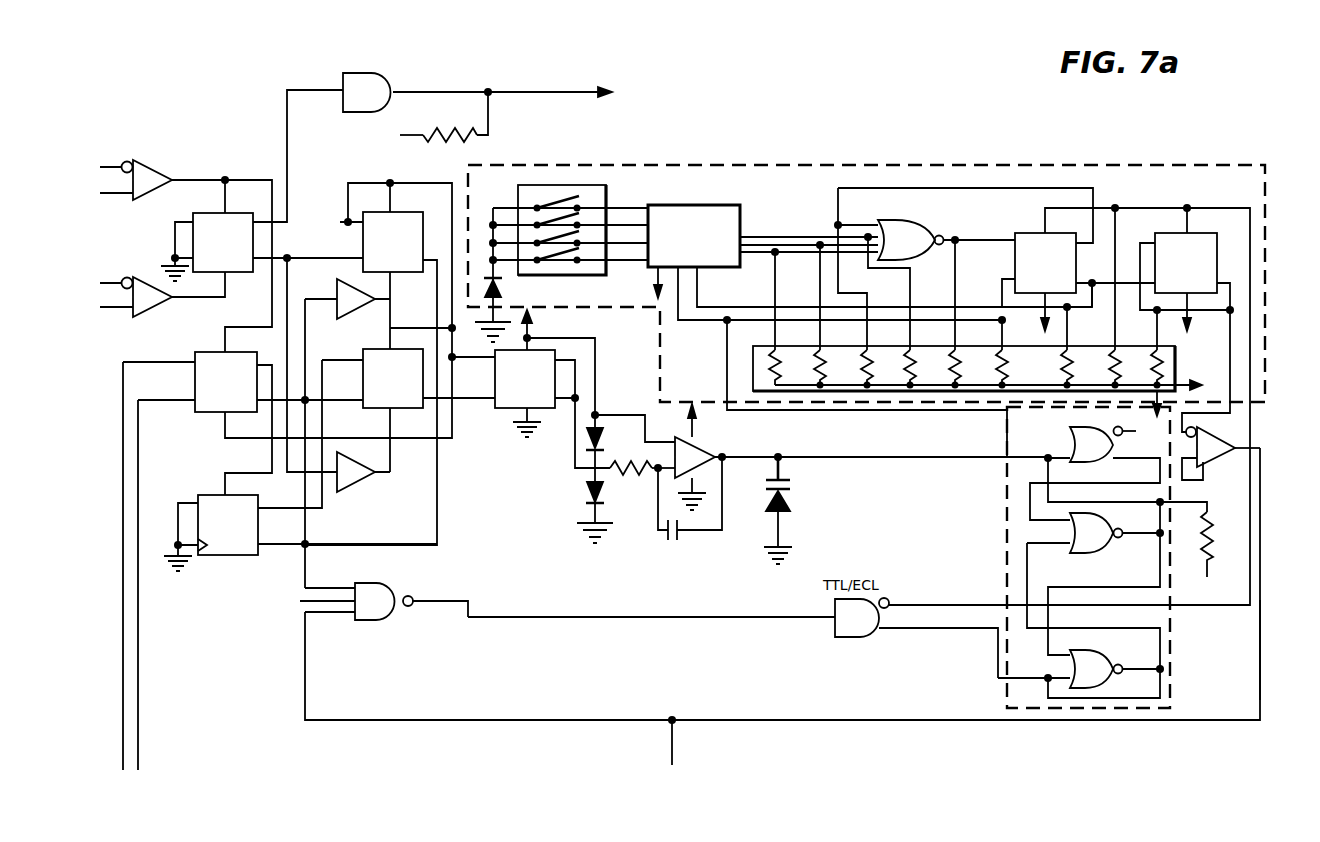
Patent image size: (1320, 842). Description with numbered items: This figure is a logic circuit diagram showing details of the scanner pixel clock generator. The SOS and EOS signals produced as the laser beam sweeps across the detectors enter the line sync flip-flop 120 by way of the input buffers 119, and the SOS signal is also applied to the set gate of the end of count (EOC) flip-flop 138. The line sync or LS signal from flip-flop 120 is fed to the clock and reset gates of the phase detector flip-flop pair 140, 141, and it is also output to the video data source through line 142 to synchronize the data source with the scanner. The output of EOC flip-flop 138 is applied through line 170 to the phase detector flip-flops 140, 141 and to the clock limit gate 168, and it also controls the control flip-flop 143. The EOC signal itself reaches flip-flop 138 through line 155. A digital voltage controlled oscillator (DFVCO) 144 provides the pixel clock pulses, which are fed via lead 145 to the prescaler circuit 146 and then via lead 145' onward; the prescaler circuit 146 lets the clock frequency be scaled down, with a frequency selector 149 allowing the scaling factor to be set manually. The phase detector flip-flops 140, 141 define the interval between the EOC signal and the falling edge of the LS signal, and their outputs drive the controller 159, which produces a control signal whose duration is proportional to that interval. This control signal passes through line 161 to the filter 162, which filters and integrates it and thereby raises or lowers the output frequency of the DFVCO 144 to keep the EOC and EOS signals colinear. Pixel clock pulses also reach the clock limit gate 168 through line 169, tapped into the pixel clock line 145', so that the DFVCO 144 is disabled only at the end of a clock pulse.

The start-of-scan input inverter 119 is at (213, 181).
The line sync flip-flop 120 is at (209, 213).
The end of count (EOC) flip-flop 138 is at (213, 352).
The phase detector flip-flop 140 is at (399, 213).
The phase detector flip-flop 141 is at (377, 345).
The line 142 is at (479, 77).
The control flip-flop 143 is at (210, 495).
The digital voltage controlled oscillator (DFVCO) 144 is at (988, 538).
The lead 145 is at (867, 389).
The lead 145' is at (964, 682).
The prescaler circuit 146 is at (886, 368).
The frequency selector 149 is at (612, 180).
The line 155 is at (123, 659).
The controller 159 is at (508, 412).
The line 161 is at (576, 467).
The filter 162 is at (704, 445).
The clock limit gate 168 is at (397, 590).
The line 169 is at (336, 720).
The line 170 is at (312, 373).